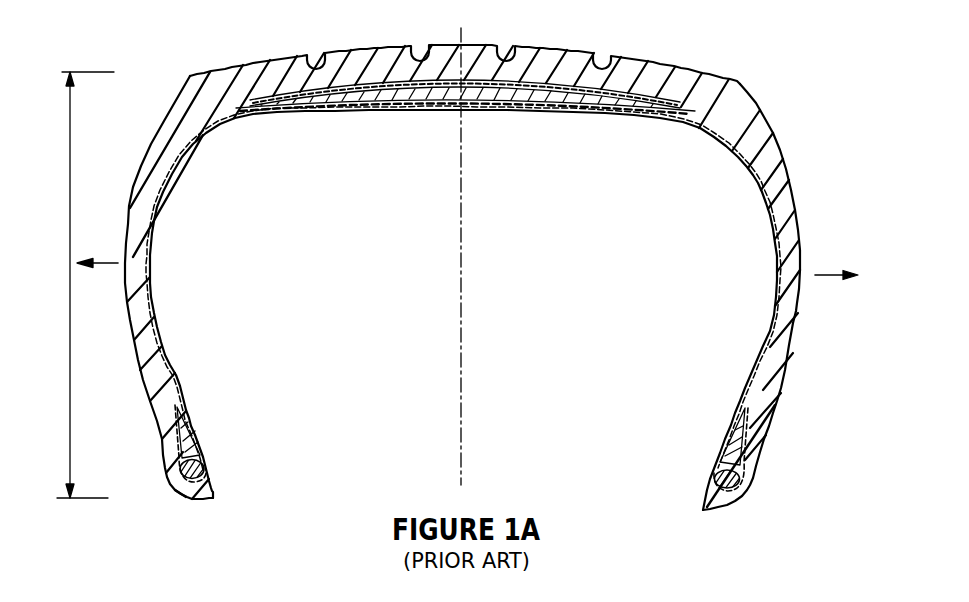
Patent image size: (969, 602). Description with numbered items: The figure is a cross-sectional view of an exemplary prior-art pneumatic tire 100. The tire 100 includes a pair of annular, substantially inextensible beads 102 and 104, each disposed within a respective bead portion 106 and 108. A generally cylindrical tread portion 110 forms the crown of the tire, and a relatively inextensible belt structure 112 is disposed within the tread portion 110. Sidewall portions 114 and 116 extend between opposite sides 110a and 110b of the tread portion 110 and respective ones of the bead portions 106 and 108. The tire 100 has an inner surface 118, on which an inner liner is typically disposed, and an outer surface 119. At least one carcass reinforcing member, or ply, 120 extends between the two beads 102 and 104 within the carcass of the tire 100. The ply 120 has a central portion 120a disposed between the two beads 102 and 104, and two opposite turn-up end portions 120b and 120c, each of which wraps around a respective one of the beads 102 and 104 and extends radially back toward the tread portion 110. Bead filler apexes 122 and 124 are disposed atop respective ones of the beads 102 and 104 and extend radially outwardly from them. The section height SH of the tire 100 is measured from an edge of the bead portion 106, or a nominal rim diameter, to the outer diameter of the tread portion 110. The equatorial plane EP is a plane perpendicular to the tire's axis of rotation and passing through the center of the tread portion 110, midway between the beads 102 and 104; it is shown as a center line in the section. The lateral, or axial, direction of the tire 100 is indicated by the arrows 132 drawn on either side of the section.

The pneumatic tire 100 is at (463, 276).
The bead 102 is at (204, 469).
The bead 104 is at (714, 483).
The bead portion 106 is at (156, 484).
The bead portion 108 is at (798, 508).
The tread portion 110 is at (630, 53).
The side of tread portion 110a is at (743, 82).
The side of tread portion 110b is at (187, 75).
The belt structure 112 is at (533, 80).
The sidewall portion 114 is at (126, 300).
The sidewall portion 116 is at (798, 327).
The inner surface 118 is at (160, 200).
The outer surface 119 is at (143, 163).
The carcass reinforcing member 120 is at (427, 112).
The central portion of ply 120a is at (540, 111).
The turn-up end of ply 120b is at (174, 429).
The turn-up end of ply 120c is at (747, 430).
The bead filler apex 122 is at (188, 443).
The bead filler apex 124 is at (730, 448).
The arrows indicating lateral direction 132 is at (113, 263).
The section height SH is at (84, 285).
The equatorial plane EP is at (461, 312).